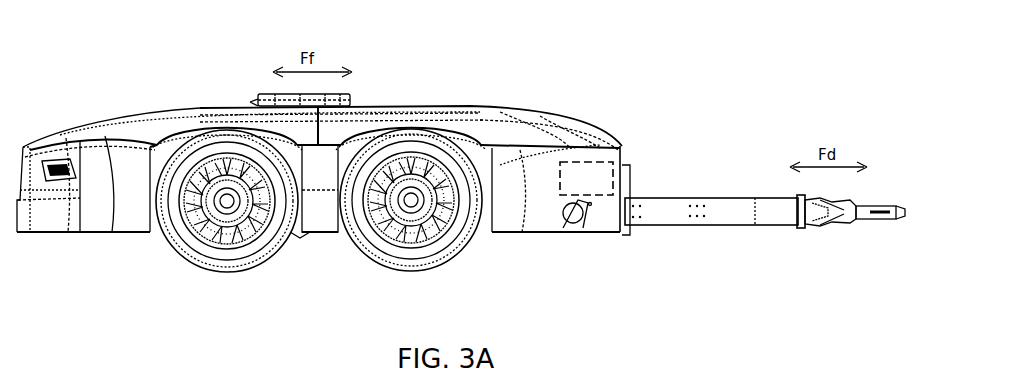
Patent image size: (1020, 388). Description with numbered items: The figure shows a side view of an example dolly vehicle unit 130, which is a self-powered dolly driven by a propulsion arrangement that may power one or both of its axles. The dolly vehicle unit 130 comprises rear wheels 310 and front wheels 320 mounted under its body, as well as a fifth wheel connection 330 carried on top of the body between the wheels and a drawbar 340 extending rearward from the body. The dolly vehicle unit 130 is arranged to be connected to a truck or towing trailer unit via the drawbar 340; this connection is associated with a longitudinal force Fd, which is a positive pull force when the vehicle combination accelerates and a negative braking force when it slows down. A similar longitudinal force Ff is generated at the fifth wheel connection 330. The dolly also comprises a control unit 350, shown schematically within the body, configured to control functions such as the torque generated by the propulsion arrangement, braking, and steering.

The dolly vehicle unit 130 is at (106, 56).
The rear wheels 310 is at (187, 243).
The front wheels 320 is at (455, 243).
The fifth wheel connection 330 is at (346, 97).
The drawbar 340 is at (731, 208).
The control unit 350 is at (586, 178).